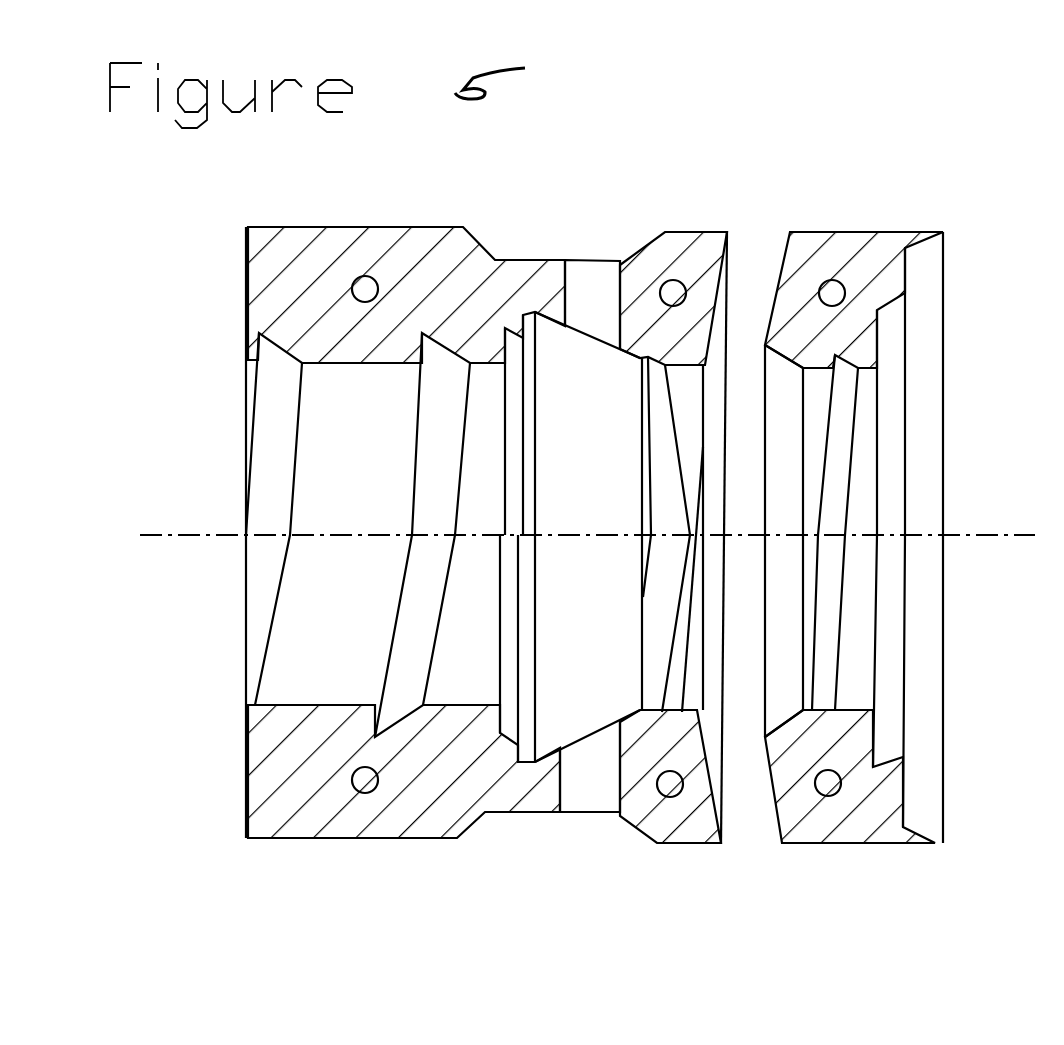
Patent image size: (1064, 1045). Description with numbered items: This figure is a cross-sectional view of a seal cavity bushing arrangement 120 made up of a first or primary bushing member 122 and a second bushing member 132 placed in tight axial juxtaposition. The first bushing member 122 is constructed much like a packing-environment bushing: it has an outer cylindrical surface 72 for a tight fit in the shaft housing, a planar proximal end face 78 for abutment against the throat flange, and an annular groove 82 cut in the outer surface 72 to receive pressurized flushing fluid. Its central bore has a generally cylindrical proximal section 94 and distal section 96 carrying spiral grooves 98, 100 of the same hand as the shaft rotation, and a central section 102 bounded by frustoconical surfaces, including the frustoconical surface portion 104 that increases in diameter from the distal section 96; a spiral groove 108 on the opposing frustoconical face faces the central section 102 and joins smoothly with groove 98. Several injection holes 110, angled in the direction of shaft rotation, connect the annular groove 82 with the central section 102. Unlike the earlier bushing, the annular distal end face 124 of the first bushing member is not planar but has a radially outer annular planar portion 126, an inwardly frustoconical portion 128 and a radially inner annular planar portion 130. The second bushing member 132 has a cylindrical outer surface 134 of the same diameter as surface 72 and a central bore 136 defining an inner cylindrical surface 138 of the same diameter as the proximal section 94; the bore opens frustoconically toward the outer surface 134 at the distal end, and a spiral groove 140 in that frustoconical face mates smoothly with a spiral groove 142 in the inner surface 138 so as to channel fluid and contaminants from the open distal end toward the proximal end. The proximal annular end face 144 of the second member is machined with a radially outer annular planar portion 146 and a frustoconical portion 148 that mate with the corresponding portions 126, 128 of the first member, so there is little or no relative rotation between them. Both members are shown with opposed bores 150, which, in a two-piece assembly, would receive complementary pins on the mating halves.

The outer cylindrical surface 72 is at (343, 228).
The planar proximal end face 78 is at (246, 781).
The annular groove 82 is at (494, 261).
The proximal section 94 is at (317, 705).
The distal section 96 is at (645, 702).
The spiral groove 98 is at (262, 358).
The spiral groove 100 is at (664, 712).
The central section 102 is at (567, 420).
The frustoconical surface portion 104 is at (549, 326).
The spiral groove 108 is at (506, 742).
The injection holes 110 is at (597, 282).
The arrangement 120 is at (208, 223).
The first bushing member 122 is at (228, 350).
The annular distal end face 124 is at (792, 242).
The radially outer annular planar portion 126 is at (732, 838).
The inwardly frustoconical portion 128 is at (773, 820).
The radially inner annular planar portion 130 is at (705, 718).
The second bushing member 132 is at (958, 253).
The cylindrical outer surface 134 is at (920, 232).
The central bore 136 is at (888, 480).
The inner cylindrical surface 138 is at (845, 706).
The spiral groove 140 is at (890, 320).
The spiral groove 142 is at (845, 357).
The proximal annular end face 144 is at (720, 776).
The radially outer annular planar portion 146 is at (719, 296).
The frustoconical portion 148 is at (784, 240).
The bores 150 is at (367, 288).